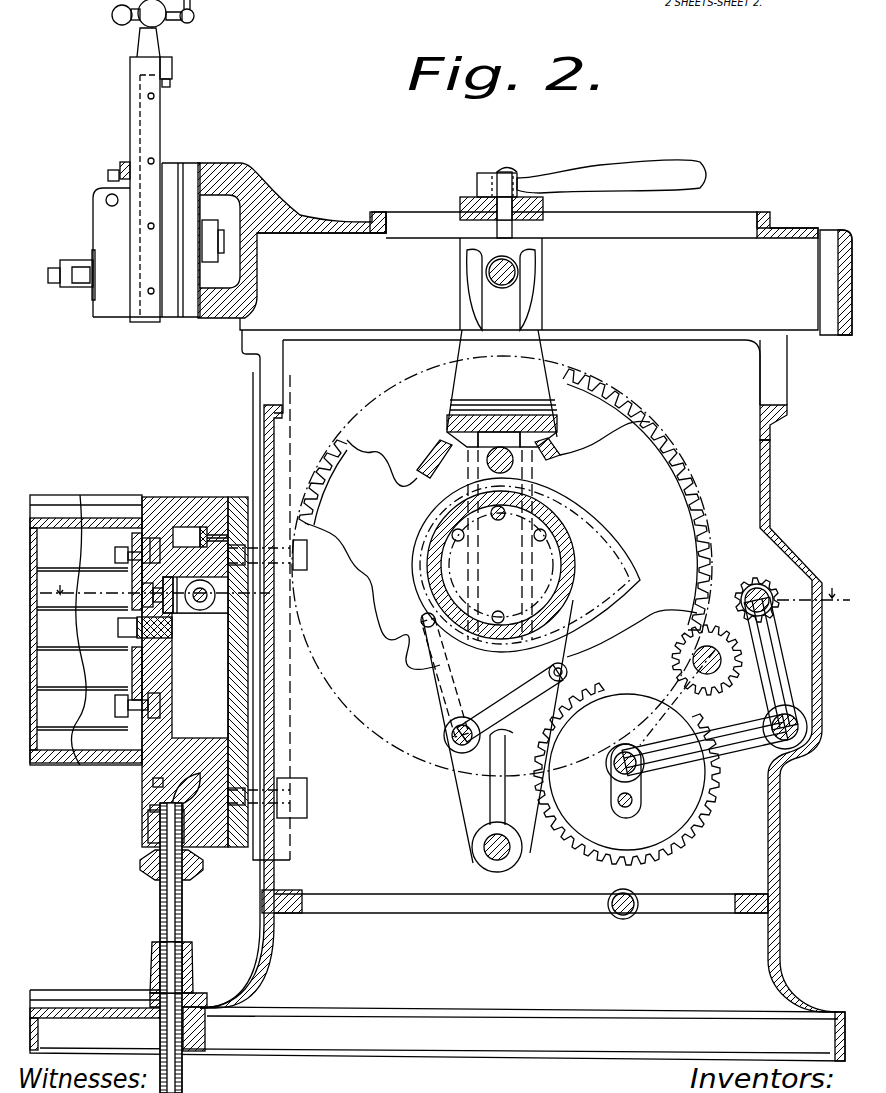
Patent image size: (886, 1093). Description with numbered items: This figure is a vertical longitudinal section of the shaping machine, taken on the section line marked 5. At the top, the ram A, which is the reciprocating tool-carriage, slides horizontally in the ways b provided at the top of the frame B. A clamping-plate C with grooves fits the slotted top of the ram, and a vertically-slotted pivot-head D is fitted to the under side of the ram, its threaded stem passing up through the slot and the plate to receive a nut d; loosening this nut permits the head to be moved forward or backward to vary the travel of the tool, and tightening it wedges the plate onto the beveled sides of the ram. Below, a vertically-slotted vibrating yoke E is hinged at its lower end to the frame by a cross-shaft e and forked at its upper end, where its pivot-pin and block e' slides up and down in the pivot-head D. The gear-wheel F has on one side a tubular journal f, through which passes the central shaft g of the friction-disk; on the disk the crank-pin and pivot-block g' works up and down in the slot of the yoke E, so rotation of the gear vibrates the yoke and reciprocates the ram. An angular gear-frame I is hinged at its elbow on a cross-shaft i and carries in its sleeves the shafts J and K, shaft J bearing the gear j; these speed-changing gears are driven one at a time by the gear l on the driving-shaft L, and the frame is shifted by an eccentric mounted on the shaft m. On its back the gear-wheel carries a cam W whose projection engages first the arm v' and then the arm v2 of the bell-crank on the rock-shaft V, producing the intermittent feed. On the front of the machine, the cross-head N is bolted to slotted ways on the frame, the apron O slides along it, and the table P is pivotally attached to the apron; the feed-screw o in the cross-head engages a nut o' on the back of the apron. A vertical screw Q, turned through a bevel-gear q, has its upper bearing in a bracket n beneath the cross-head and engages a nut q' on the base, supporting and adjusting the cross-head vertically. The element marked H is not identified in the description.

The ram A is at (525, 249).
The frame B is at (437, 695).
The ways b is at (340, 340).
The clamping-plate C is at (470, 208).
The nut d is at (520, 175).
The pivot-head D is at (544, 253).
The pivot-pin and block e' is at (473, 275).
The vibrating yoke E is at (495, 596).
The crank-pin and pivot-block g' is at (503, 419).
The cam W is at (628, 586).
The central shaft g is at (501, 545).
The tubular journal f is at (588, 577).
The gear-wheel F is at (502, 566).
The bell-crank arm v' is at (433, 675).
The rock-shaft V is at (444, 735).
The bell-crank arm v2 is at (548, 686).
The cross-shaft e is at (481, 847).
The shaft J is at (625, 765).
The gear j is at (630, 814).
The angular gear-frame I is at (740, 752).
The cross-shaft i is at (800, 744).
The link H is at (779, 592).
The shaft K is at (748, 588).
The driving-shaft L is at (690, 655).
The driving gear l is at (712, 645).
The eccentric-shaft m is at (630, 894).
The table P is at (86, 615).
The apron O is at (175, 495).
The feed-screw o is at (195, 615).
The nut o' is at (205, 619).
The cross-head N is at (240, 497).
The bracket n is at (146, 826).
The bevel-gear q is at (160, 871).
The vertical screw Q is at (158, 920).
The nut q' is at (155, 967).
The section line 5 is at (445, 599).